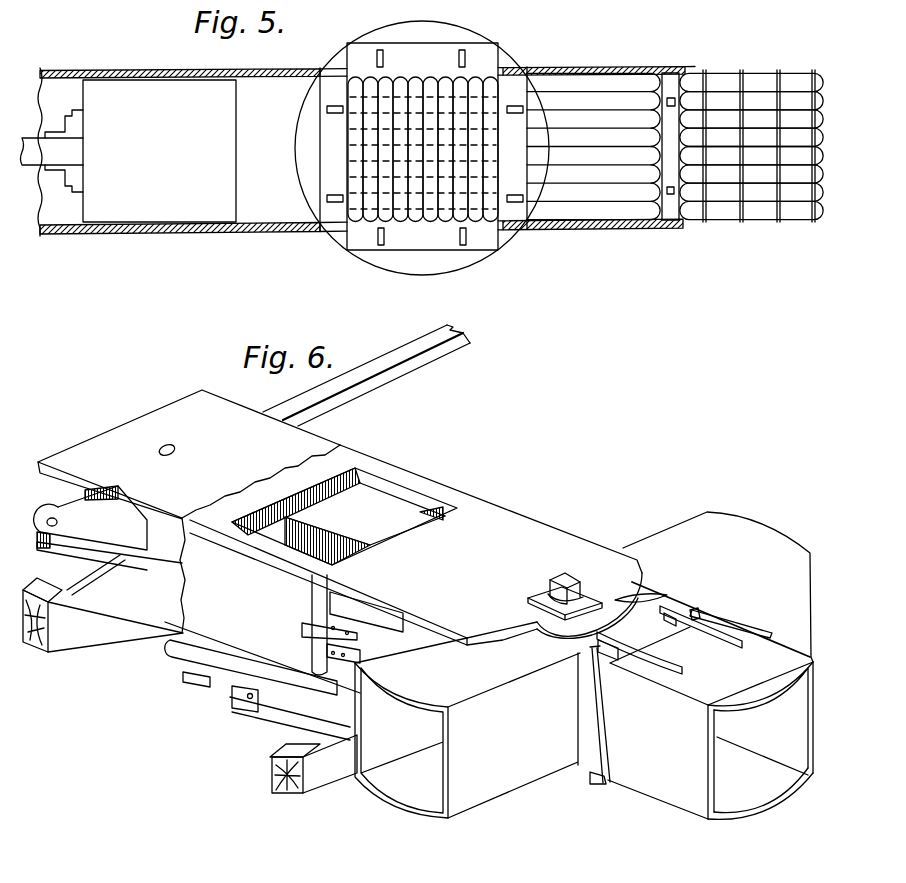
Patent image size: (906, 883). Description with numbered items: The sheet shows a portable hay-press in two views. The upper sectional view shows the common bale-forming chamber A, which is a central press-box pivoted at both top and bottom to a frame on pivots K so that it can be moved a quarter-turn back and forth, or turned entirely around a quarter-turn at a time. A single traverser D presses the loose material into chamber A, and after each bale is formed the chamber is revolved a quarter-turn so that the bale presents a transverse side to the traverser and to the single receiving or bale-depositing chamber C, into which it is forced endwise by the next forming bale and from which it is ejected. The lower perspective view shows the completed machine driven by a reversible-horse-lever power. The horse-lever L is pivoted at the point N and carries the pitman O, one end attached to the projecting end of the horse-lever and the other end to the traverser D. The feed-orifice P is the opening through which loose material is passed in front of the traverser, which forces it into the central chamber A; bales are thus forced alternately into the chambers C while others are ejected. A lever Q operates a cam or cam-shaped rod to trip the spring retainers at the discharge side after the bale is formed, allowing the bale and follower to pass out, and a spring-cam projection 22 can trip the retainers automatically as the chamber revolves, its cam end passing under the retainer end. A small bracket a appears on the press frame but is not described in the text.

In FIG. 5, the traverser D is at (129, 151).
In FIG. 6, the traverser D is at (365, 538).
In FIG. 5, the pivots K is at (585, 146).
In FIG. 6, the pivots K is at (668, 656).
In FIG. 5, the bale-forming chamber A is at (435, 223).
In FIG. 6, the bale-forming chamber A is at (548, 592).
In FIG. 5, the bale-depositing chamber C is at (607, 231).
In FIG. 6, the bale-depositing chamber C is at (584, 665).
In FIG. 6, the pivot point of horse-lever N is at (176, 449).
In FIG. 6, the horse-lever L is at (413, 368).
In FIG. 6, the feed-orifice P is at (418, 497).
In FIG. 6, the projection 22 is at (665, 597).
In FIG. 6, the lever Q is at (760, 623).
In FIG. 6, the pitman O is at (102, 550).
In FIG. 6, the bracket a is at (390, 632).